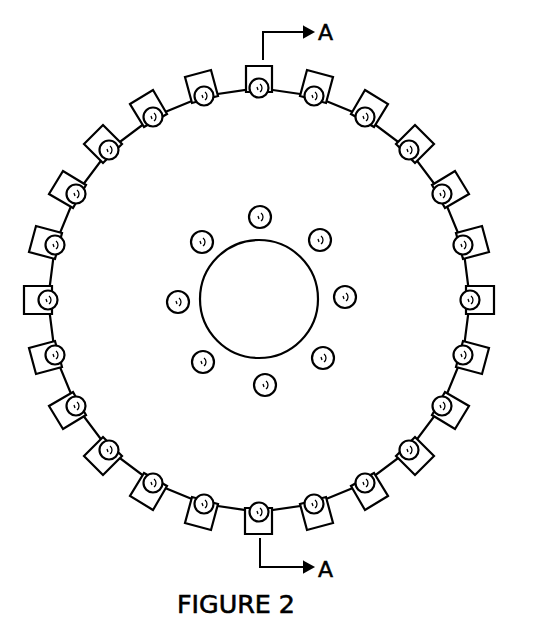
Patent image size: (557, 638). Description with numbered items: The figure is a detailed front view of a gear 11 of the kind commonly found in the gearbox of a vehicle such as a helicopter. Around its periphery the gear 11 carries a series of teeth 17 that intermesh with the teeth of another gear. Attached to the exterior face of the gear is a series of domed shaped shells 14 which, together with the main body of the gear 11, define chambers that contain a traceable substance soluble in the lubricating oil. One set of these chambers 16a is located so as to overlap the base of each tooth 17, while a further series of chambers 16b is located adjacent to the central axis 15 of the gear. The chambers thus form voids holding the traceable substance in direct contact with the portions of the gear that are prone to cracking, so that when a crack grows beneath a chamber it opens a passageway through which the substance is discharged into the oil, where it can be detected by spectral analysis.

The gear 11 is at (420, 75).
The domed shaped shells 14 is at (78, 190).
The central axis 15 is at (240, 323).
The chambers 16a is at (418, 146).
The chambers 16b is at (353, 289).
The teeth 17 is at (146, 94).